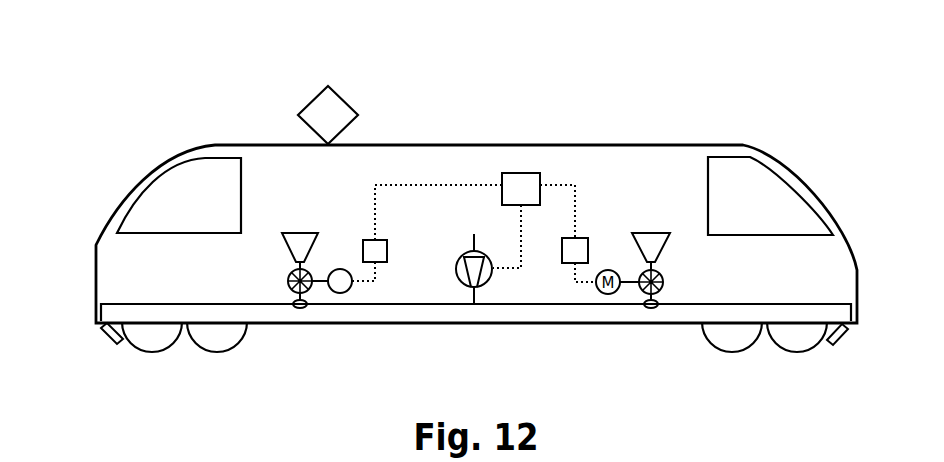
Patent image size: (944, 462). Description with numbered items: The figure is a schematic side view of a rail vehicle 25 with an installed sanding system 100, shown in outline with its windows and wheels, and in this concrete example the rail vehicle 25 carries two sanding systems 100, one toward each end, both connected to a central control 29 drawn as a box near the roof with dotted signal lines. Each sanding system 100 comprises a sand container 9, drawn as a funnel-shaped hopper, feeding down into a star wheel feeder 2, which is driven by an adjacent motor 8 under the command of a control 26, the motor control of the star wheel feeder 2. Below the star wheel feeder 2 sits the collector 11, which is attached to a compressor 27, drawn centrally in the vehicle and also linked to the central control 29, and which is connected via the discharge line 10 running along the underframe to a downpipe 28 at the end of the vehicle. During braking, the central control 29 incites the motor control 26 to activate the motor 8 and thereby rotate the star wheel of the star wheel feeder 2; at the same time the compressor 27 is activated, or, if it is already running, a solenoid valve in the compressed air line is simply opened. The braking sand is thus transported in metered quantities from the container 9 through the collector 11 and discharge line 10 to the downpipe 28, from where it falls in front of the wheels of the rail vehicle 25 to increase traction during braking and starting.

The star wheel feeder 2 is at (305, 294).
The motor 8 is at (352, 292).
The sand container 9 is at (302, 250).
The discharge line 10 is at (170, 302).
The collector 11 is at (298, 309).
The rail vehicle 25 is at (668, 105).
The control 26 is at (377, 252).
The compressor 27 is at (473, 273).
The downpipe 28 is at (114, 337).
The central control 29 is at (522, 190).
The sanding system 100 is at (307, 282).